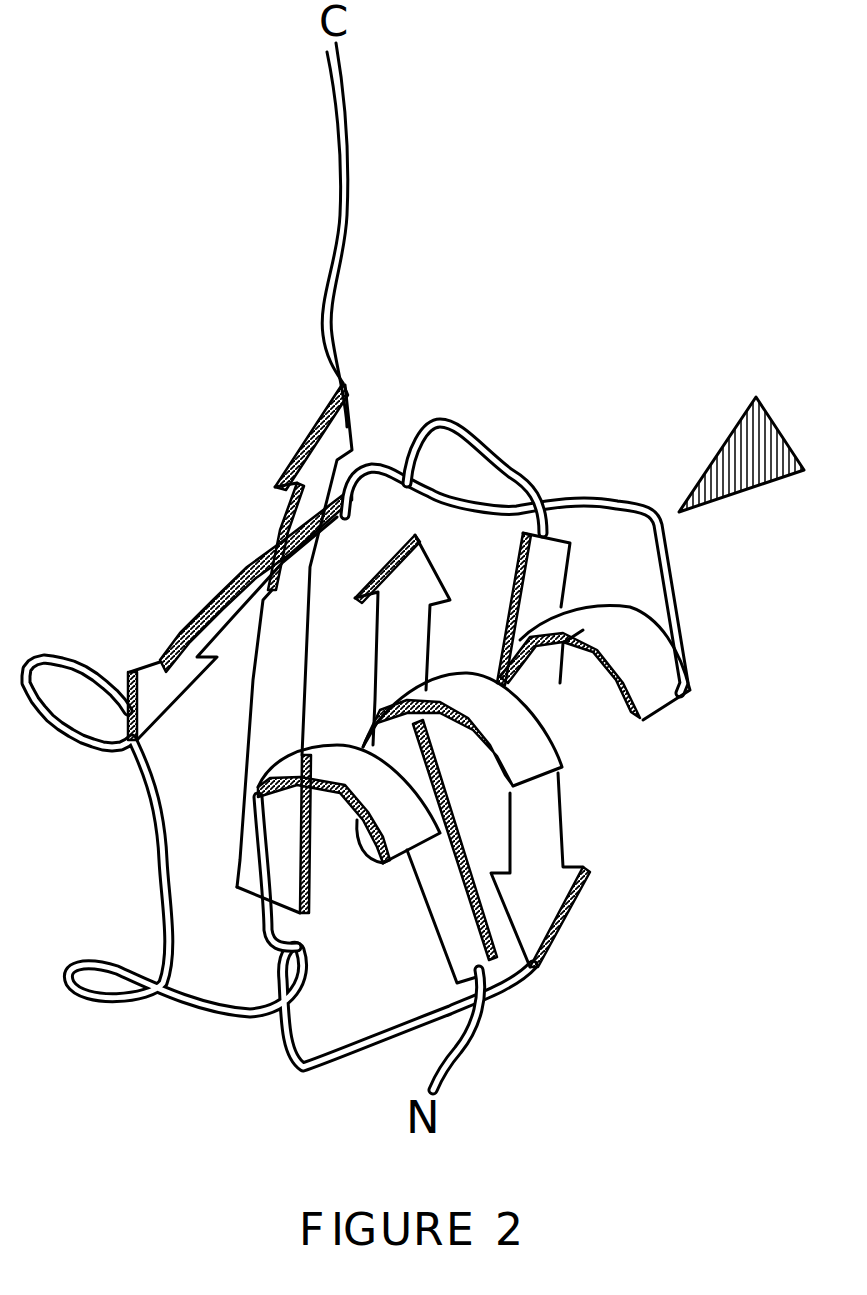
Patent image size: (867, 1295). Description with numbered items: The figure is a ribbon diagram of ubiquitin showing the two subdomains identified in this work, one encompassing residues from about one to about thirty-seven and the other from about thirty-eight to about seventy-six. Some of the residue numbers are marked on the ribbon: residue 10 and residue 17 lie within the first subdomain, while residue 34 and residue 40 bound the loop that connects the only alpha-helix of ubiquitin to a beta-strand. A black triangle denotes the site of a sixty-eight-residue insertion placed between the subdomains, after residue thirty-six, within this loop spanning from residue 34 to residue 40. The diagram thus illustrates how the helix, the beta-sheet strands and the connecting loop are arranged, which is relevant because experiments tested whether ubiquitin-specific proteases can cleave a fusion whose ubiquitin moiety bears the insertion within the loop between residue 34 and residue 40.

The residue 10 is at (514, 558).
The residue 17 is at (540, 762).
The residue 34 is at (618, 663).
The residue 40 is at (318, 648).